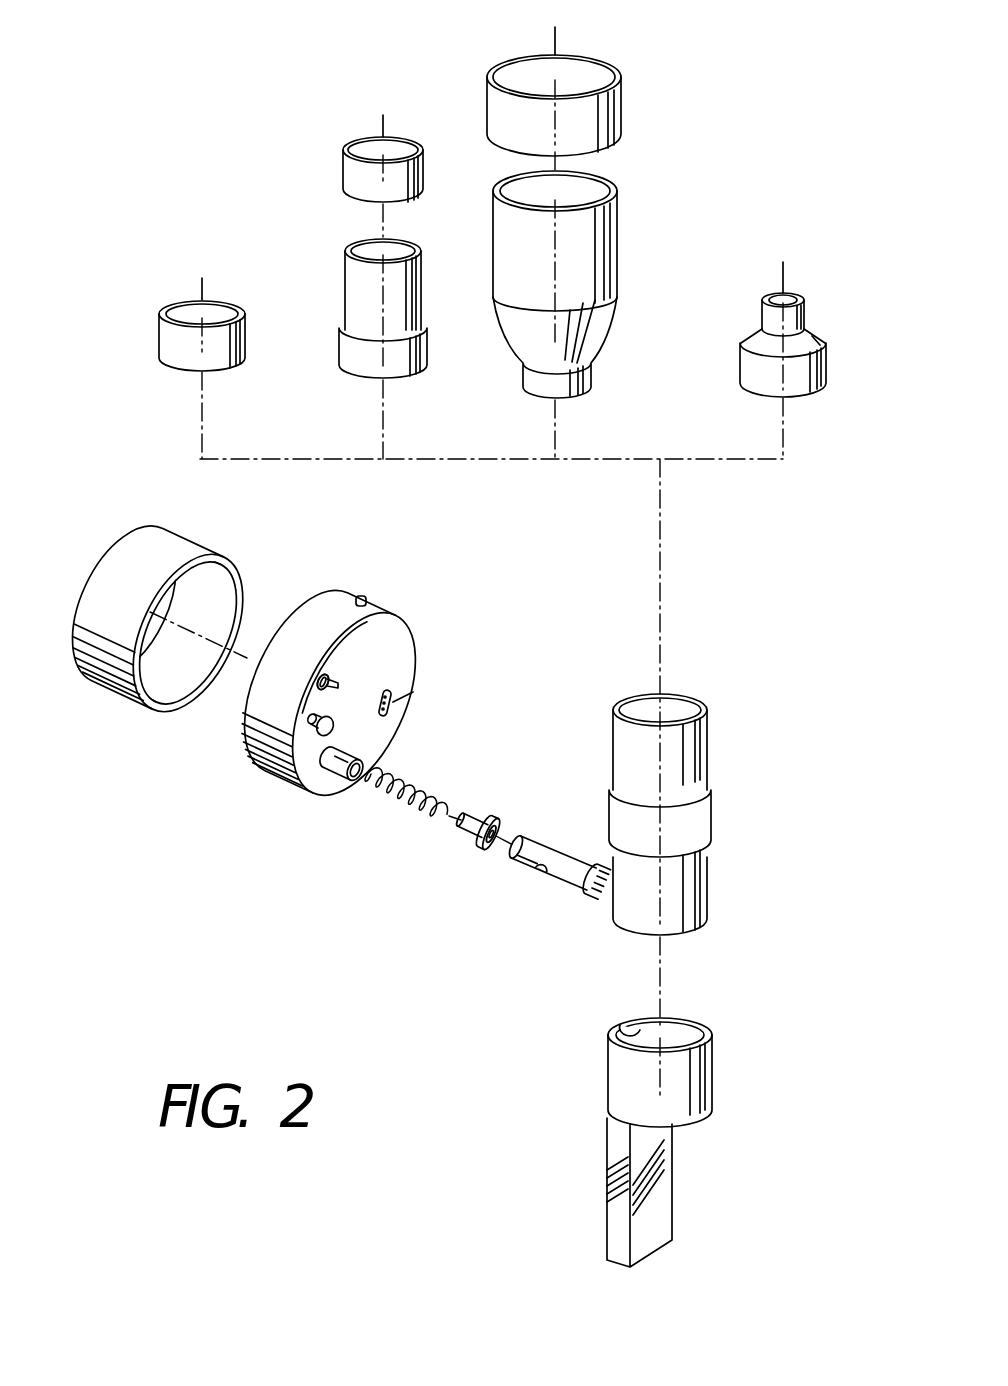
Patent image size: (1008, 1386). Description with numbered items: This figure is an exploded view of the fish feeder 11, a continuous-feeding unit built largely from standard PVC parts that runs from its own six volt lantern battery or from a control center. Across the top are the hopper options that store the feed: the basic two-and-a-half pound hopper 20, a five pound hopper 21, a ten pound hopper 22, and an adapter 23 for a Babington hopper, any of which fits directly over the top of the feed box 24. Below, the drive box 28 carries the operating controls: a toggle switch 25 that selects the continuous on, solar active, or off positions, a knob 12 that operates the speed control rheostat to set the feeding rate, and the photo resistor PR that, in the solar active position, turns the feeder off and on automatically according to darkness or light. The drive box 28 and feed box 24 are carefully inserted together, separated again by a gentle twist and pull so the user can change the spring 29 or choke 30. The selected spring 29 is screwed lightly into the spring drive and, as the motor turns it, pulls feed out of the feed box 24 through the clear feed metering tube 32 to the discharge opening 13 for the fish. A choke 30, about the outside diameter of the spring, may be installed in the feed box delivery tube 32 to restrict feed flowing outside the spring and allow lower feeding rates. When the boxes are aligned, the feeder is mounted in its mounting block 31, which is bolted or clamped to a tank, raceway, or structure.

The feeder 11 is at (108, 457).
The knob 12 is at (325, 732).
The opening 13 is at (550, 870).
The hopper 20 is at (183, 302).
The hopper 21 is at (300, 160).
The hopper 22 is at (690, 117).
The adapter 23 is at (800, 310).
The feed box 24 is at (695, 826).
The toggle switch 25 is at (327, 677).
The drive box 28 is at (128, 698).
The spring 29 is at (408, 807).
The choke 30 is at (472, 835).
The mounting block 31 is at (710, 1110).
The feed box delivery tube 32 is at (530, 840).
The photo resistor PR is at (365, 598).